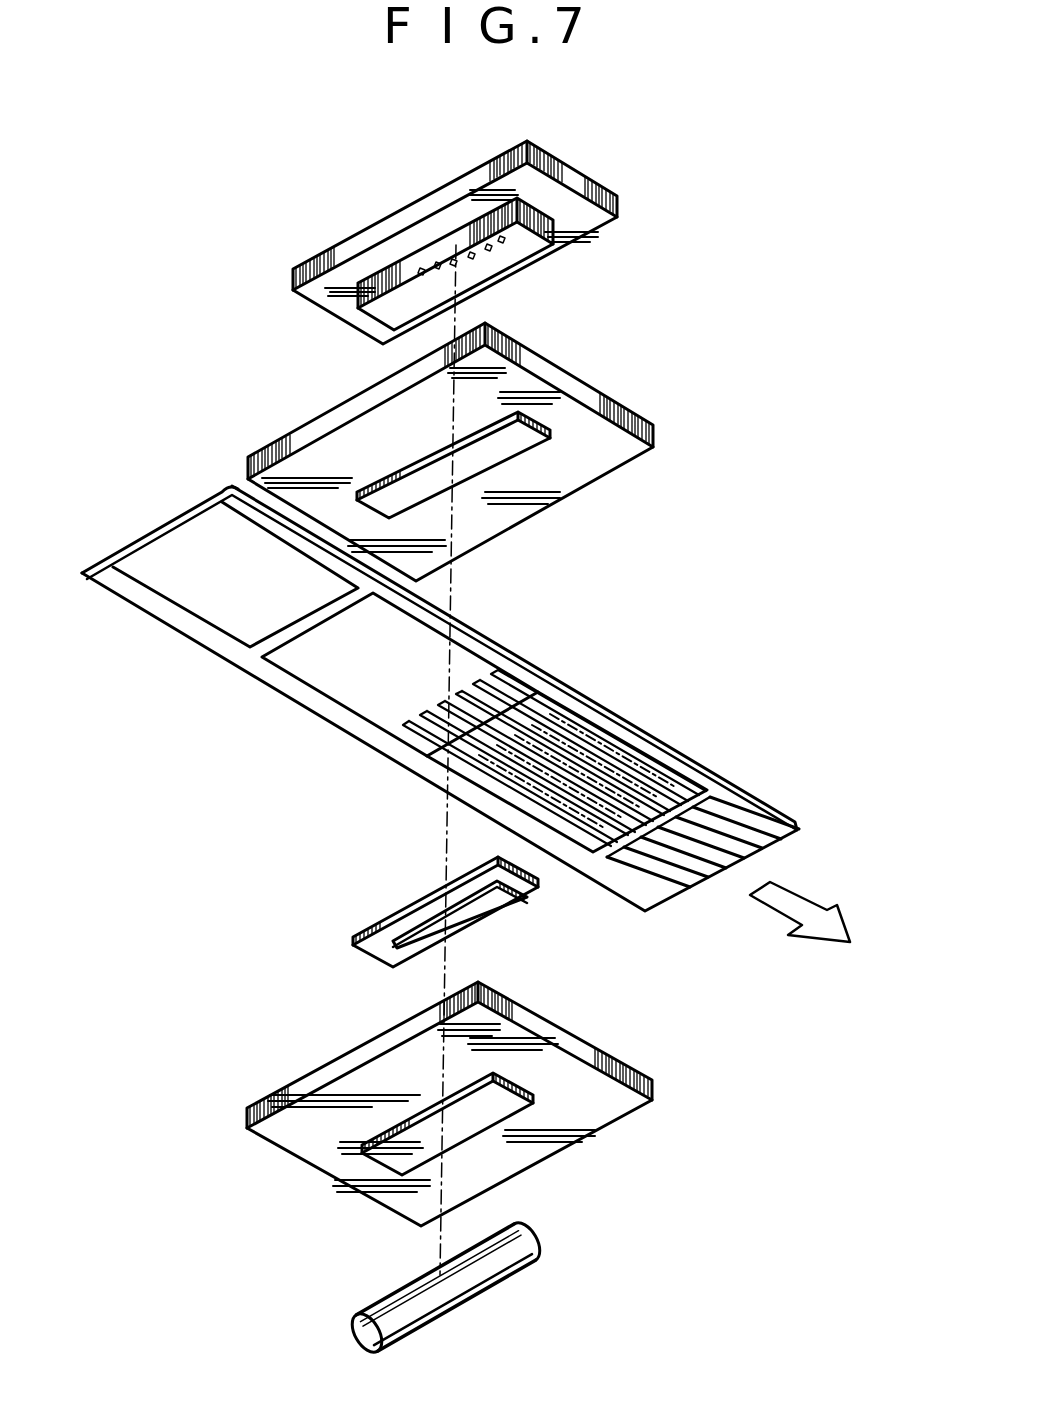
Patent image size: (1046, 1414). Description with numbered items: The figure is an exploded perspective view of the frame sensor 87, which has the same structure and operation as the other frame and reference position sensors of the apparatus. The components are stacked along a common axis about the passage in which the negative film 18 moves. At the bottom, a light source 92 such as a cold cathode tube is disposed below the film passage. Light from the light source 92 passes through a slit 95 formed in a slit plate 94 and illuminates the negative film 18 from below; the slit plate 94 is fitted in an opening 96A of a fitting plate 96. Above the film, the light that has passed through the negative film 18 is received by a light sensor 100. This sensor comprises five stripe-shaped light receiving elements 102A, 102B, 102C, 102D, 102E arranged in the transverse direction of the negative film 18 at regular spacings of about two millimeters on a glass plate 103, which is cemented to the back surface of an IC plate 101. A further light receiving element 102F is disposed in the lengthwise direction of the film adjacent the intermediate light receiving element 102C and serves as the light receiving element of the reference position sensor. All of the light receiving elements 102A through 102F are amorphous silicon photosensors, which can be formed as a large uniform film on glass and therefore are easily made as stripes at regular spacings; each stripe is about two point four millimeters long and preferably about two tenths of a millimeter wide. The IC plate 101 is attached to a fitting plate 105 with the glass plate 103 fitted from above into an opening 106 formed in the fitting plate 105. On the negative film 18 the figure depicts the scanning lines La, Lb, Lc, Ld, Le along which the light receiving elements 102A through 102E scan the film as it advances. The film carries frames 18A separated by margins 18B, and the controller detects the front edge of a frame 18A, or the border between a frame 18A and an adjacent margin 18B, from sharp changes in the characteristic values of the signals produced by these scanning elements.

The frame sensor 87 is at (668, 140).
The light sensor 100 is at (630, 200).
The IC plate 101 is at (615, 192).
The glass plate 103 is at (293, 290).
The light receiving element 102A is at (505, 238).
The light receiving element 102B is at (492, 247).
The light receiving element 102C is at (473, 255).
The light receiving element 102D is at (453, 260).
The light receiving element 102E is at (422, 270).
The light receiving element 102F is at (440, 262).
The fitting plate 105 is at (640, 420).
The opening 106 is at (463, 448).
The negative film 18 is at (597, 694).
The frame 18A is at (207, 625).
The margin 18B is at (255, 650).
The scanning line La is at (775, 840).
The scanning line Lb is at (765, 858).
The scanning line Lc is at (727, 870).
The scanning line Ld is at (712, 868).
The scanning line Le is at (692, 878).
The slit plate 94 is at (526, 900).
The slit 95 is at (483, 905).
The fitting plate 96 is at (632, 1075).
The opening 96A is at (450, 1112).
The light source 92 is at (542, 1252).